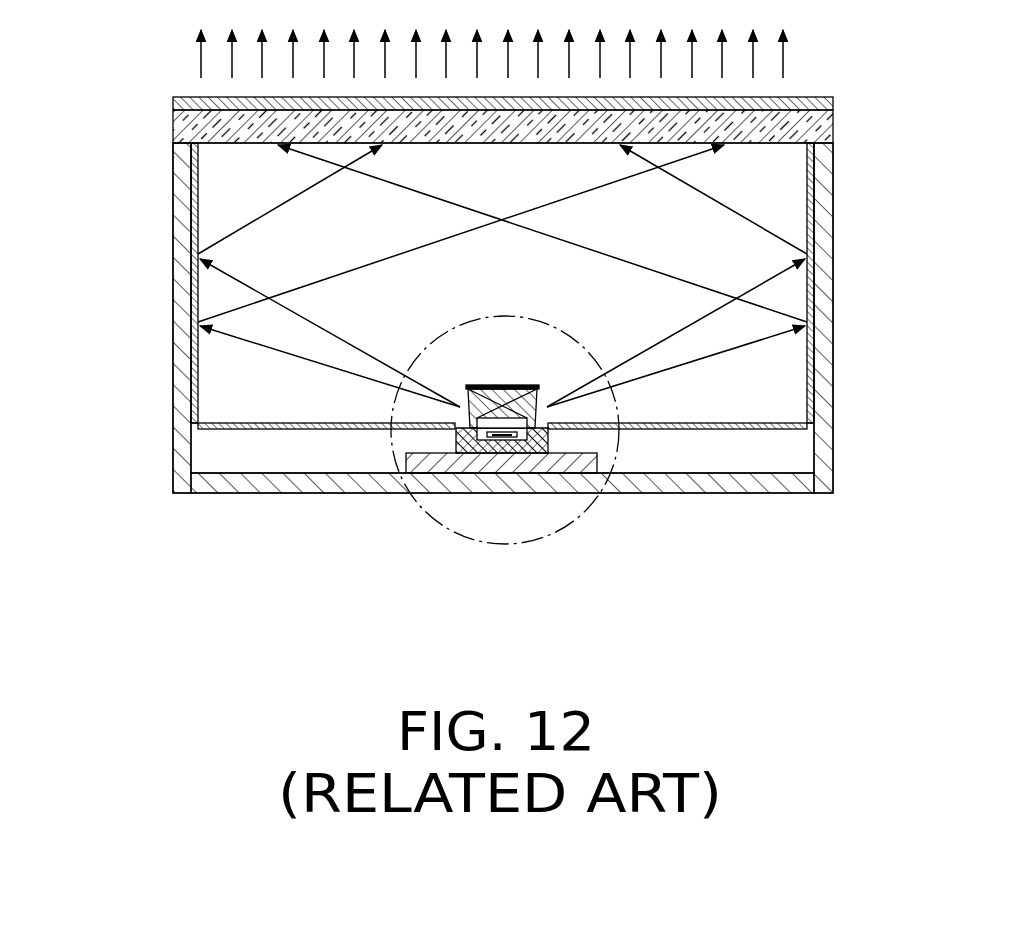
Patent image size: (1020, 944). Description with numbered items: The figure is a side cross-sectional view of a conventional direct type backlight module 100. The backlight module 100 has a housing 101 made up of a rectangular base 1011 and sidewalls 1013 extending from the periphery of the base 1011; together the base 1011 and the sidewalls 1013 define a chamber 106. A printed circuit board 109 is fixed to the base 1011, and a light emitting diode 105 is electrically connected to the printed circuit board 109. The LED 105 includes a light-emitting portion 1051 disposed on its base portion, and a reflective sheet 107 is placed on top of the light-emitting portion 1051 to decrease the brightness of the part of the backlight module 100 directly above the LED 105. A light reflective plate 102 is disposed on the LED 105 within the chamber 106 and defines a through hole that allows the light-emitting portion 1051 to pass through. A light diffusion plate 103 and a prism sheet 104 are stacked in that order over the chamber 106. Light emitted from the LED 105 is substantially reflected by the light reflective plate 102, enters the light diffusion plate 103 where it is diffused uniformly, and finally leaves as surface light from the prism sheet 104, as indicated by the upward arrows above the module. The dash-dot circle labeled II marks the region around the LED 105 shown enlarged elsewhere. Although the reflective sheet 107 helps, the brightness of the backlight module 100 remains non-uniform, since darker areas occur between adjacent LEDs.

The backlight module 100 is at (150, 60).
The housing 101 is at (428, 338).
The base 1011 is at (448, 503).
The sidewalls 1013 is at (182, 365).
The light reflective plate 102 is at (735, 424).
The light diffusion plate 103 is at (830, 124).
The prism sheet 104 is at (795, 97).
The light emitting diode 105 is at (534, 492).
The light-emitting portion 1051 is at (470, 426).
The chamber 106 is at (783, 200).
The reflective sheet 107 is at (500, 385).
The printed circuit board 109 is at (500, 465).
The enlarged portion II is at (563, 527).